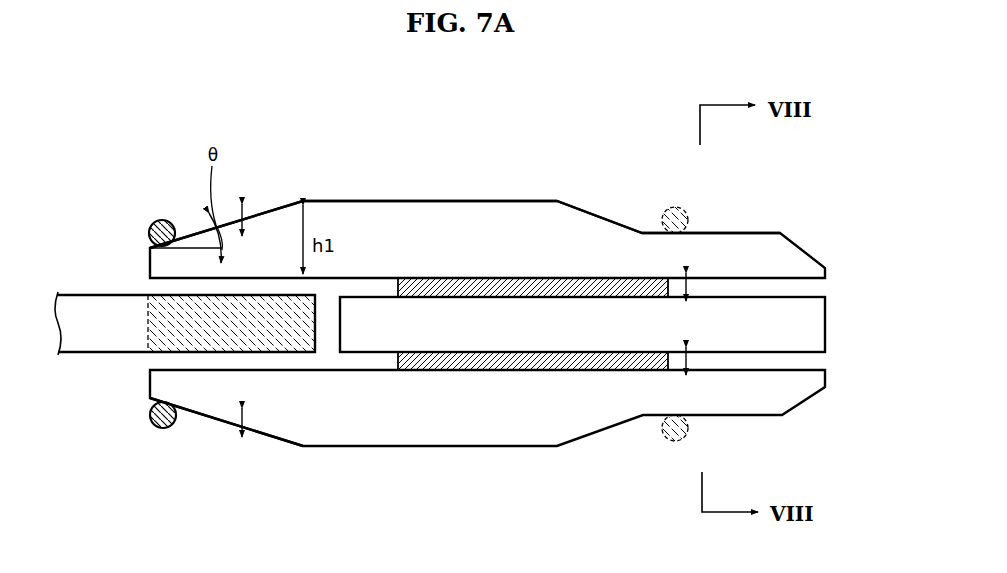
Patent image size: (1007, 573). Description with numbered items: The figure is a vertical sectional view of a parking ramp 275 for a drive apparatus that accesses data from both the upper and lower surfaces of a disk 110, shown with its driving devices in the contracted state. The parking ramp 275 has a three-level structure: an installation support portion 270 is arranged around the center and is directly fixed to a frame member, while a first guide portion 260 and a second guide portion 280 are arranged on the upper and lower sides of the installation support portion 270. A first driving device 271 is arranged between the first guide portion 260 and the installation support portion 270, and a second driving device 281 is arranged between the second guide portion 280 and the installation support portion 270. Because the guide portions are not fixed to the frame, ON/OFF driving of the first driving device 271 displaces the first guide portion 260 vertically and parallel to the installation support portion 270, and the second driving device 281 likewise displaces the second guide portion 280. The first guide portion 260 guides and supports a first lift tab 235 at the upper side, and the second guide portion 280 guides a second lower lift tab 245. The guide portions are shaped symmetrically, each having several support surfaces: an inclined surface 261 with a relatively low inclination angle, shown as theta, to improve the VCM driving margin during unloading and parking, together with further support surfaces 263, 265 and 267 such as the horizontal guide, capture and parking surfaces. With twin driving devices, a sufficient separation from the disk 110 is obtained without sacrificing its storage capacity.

The disk 110 is at (90, 345).
The first lift tab 235 is at (160, 220).
The second lower lift tab 245 is at (155, 428).
The first guide portion 260 is at (775, 260).
The inclined surface 261 is at (258, 213).
The flat portion of upper plate 263 is at (428, 200).
The second inclined portion of upper plate 265 is at (603, 216).
The end portion of upper plate 267 is at (708, 232).
The installation support portion 270 is at (727, 340).
The first driving device 271 is at (505, 278).
The parking ramp 275 is at (300, 472).
The second guide portion 280 is at (588, 419).
The second driving device 281 is at (430, 370).